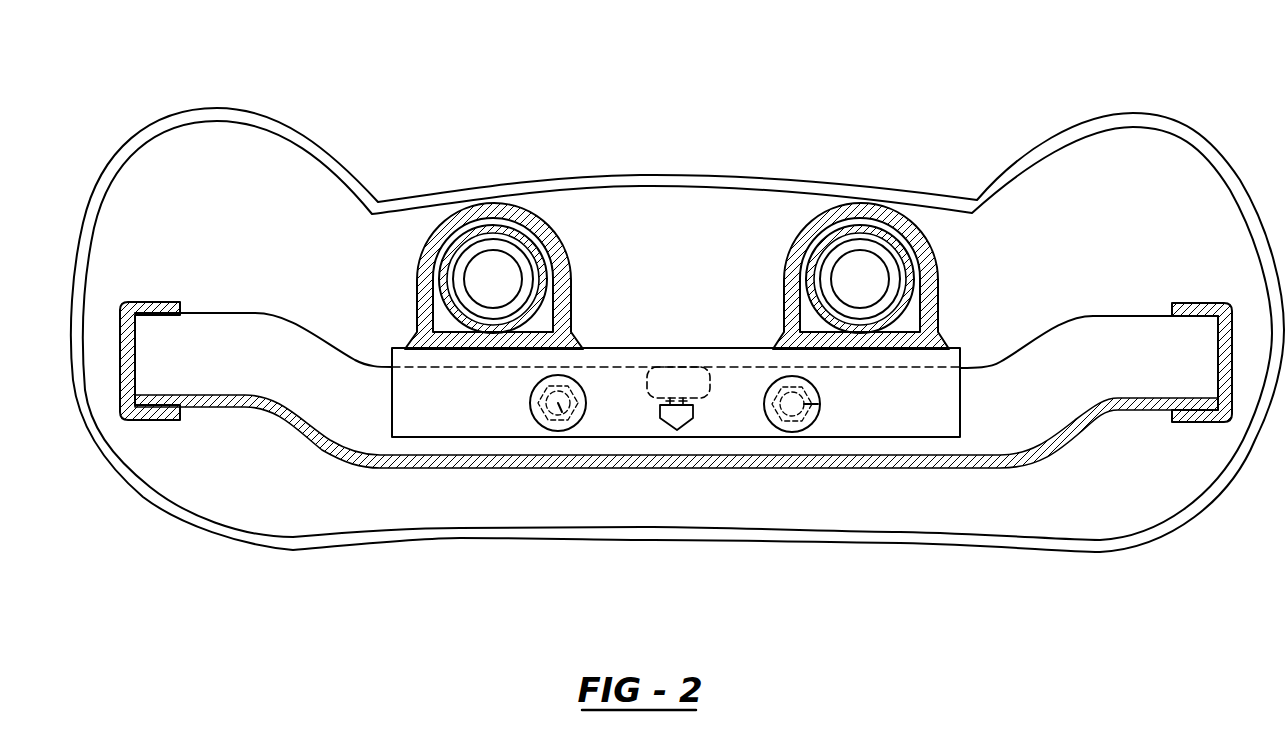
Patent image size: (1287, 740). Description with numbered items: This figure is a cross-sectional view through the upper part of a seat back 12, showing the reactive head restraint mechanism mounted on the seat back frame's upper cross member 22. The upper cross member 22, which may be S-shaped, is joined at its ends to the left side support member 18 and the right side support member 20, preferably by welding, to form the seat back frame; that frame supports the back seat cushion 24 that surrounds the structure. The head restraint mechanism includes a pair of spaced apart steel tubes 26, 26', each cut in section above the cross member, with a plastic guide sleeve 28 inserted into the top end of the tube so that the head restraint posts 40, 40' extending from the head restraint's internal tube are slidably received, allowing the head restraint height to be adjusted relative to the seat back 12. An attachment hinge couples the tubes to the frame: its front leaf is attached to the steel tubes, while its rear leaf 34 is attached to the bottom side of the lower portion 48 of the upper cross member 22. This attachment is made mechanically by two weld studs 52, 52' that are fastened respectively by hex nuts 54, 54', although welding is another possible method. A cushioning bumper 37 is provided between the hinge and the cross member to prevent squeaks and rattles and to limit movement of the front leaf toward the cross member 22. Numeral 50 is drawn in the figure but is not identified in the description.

The seat back 12 is at (287, 69).
The left side support member 18 is at (1218, 378).
The right side support member 20 is at (122, 403).
The upper cross member 22 is at (330, 407).
The back seat cushion 24 is at (1140, 197).
The steel tube 26 is at (866, 223).
The steel tube 26' is at (518, 224).
The plastic guide sleeve 28 is at (455, 318).
The rear leaf 34 is at (697, 423).
The cushioning bumper 37 is at (707, 393).
The post 40 is at (822, 211).
The post 40' is at (488, 206).
The lower portion 48 is at (1040, 398).
The weld joint 50 is at (407, 465).
The weld stud 52 is at (807, 509).
The weld stud 52' is at (498, 508).
The hex nut 54 is at (882, 511).
The hex nut 54' is at (539, 516).